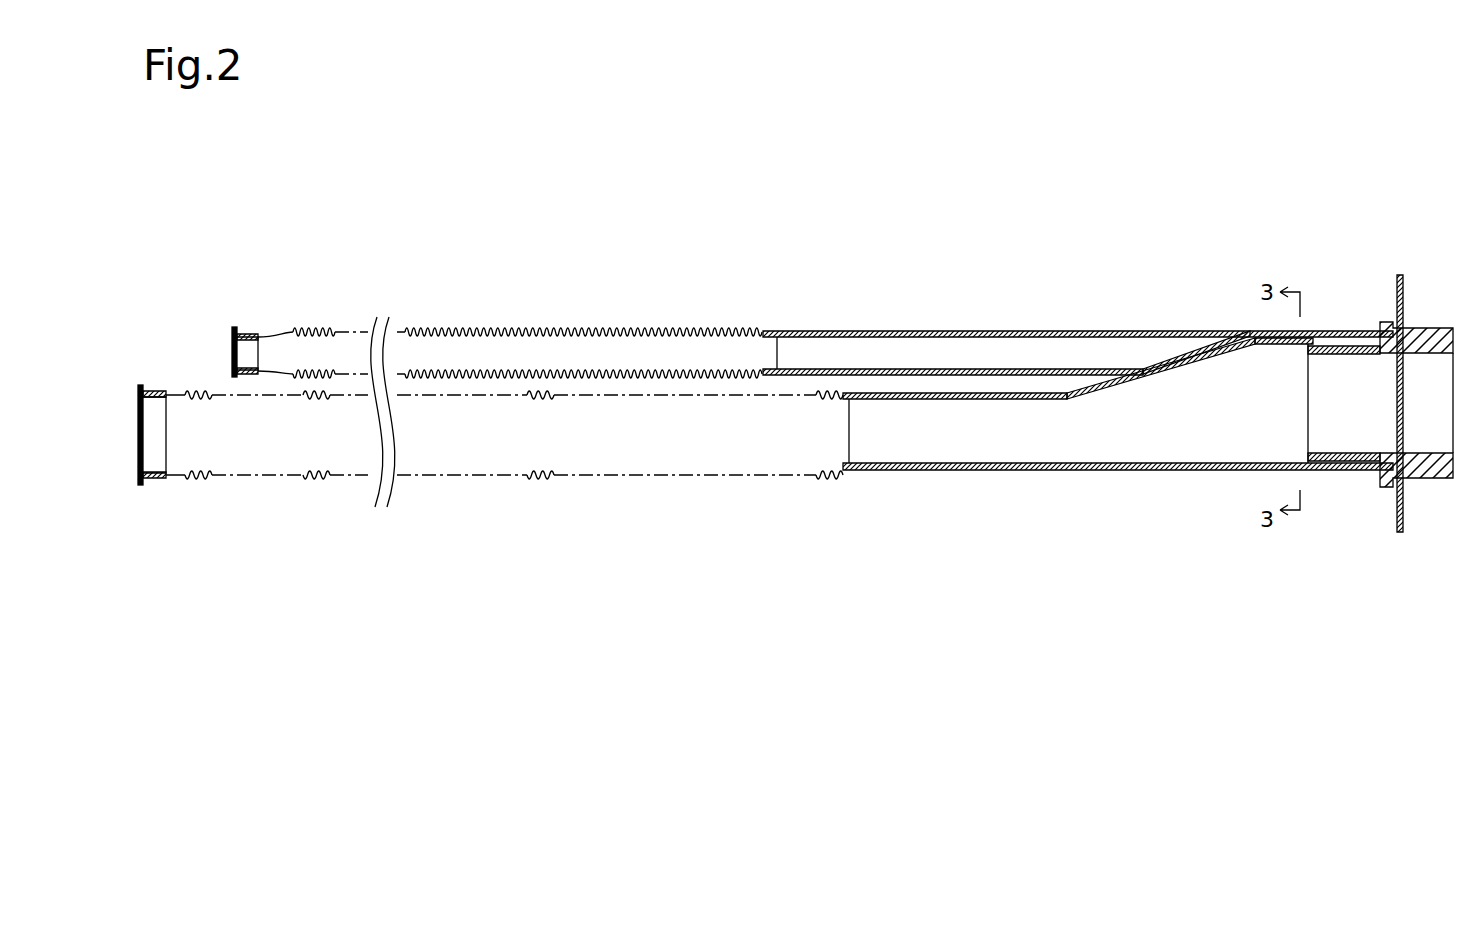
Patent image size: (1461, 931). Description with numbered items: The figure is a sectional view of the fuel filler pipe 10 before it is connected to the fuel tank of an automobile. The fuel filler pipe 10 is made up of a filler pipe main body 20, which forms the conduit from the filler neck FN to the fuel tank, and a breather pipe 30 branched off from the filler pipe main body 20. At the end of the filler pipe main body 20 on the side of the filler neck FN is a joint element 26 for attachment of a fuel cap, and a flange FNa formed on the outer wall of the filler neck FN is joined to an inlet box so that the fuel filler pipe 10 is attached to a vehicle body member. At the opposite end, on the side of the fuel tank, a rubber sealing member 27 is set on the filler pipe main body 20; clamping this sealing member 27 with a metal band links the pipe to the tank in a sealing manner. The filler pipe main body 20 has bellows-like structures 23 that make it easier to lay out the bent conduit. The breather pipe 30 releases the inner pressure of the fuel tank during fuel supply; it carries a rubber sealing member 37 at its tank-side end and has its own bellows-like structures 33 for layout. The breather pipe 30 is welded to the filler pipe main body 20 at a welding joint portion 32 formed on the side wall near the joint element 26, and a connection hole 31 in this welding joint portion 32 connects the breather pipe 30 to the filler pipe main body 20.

The fuel filler pipe 10 is at (1351, 176).
The filler pipe main body 20 is at (957, 470).
The bellows-like structures 23 is at (697, 477).
The joint element 26 is at (1330, 472).
The rubber sealing member 27 is at (155, 482).
The breather pipe 30 is at (858, 330).
The connection hole 31 is at (1193, 353).
The welding joint portion 32 is at (1158, 365).
The bellows-like structures 33 is at (637, 327).
The rubber sealing member 37 is at (237, 336).
The filler neck FN is at (1433, 478).
The flange FNa is at (1397, 520).